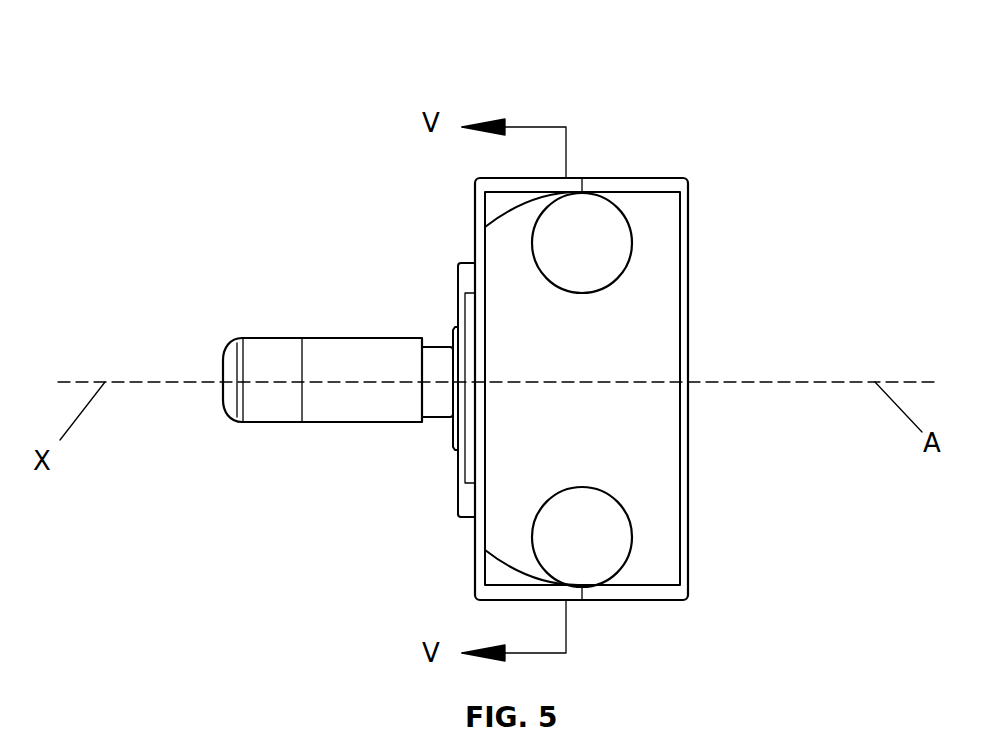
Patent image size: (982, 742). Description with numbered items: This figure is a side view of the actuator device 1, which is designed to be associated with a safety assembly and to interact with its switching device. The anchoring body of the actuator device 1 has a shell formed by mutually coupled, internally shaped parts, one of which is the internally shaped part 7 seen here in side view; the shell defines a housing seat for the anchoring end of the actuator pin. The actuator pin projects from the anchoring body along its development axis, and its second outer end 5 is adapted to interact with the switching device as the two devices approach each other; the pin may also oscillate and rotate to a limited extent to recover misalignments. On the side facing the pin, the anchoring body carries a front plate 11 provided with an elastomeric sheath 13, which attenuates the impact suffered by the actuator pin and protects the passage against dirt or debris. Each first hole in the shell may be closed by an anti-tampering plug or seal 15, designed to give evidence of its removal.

The actuator device 1 is at (814, 142).
The second outer end 5 is at (263, 345).
The internally shaped part 7 is at (628, 345).
The front plate 11 is at (456, 278).
The elastomeric sheath 13 is at (453, 437).
The anti-tampering plug or seal 15 is at (603, 222).